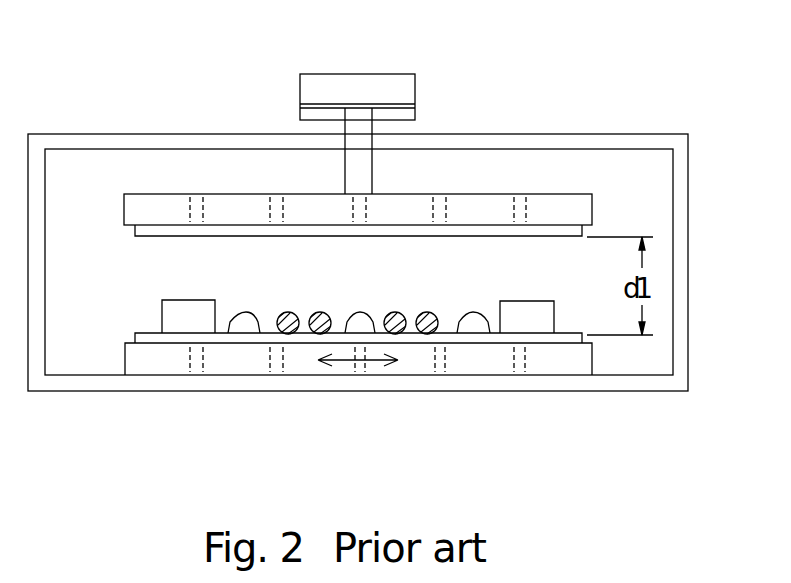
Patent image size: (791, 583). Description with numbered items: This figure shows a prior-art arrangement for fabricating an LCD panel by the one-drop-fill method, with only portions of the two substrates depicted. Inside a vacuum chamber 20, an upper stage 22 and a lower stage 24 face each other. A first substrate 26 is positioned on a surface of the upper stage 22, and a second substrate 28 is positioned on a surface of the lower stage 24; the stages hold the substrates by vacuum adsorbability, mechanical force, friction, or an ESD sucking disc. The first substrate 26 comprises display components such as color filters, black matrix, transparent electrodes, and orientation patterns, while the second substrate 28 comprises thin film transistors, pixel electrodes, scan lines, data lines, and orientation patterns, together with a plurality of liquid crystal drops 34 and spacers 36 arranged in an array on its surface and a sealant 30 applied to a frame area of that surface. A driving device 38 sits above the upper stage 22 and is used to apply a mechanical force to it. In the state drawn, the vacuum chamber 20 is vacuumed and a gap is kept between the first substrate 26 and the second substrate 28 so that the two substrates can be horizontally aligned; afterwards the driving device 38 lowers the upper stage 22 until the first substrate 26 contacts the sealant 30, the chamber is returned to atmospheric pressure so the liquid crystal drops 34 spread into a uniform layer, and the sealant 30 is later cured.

The vacuum chamber 20 is at (673, 274).
The upper stage 22 is at (592, 210).
The lower stage 24 is at (125, 360).
The first substrate 26 is at (367, 229).
The second substrate 28 is at (582, 337).
The sealant 30 is at (165, 333).
The liquid crystal drops 34 is at (250, 333).
The spacers 36 is at (296, 333).
The driving device 38 is at (355, 80).